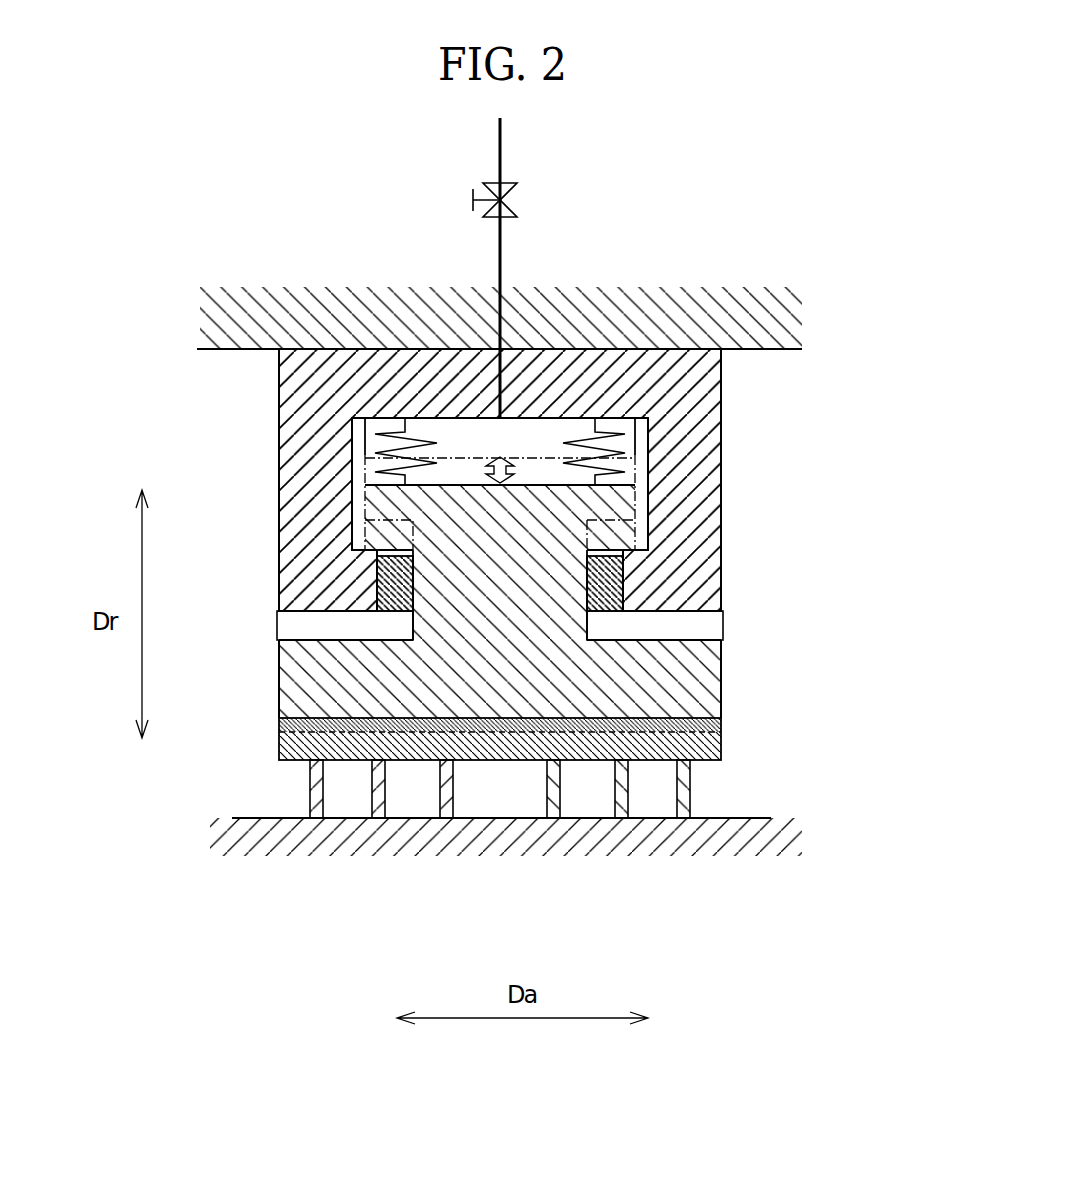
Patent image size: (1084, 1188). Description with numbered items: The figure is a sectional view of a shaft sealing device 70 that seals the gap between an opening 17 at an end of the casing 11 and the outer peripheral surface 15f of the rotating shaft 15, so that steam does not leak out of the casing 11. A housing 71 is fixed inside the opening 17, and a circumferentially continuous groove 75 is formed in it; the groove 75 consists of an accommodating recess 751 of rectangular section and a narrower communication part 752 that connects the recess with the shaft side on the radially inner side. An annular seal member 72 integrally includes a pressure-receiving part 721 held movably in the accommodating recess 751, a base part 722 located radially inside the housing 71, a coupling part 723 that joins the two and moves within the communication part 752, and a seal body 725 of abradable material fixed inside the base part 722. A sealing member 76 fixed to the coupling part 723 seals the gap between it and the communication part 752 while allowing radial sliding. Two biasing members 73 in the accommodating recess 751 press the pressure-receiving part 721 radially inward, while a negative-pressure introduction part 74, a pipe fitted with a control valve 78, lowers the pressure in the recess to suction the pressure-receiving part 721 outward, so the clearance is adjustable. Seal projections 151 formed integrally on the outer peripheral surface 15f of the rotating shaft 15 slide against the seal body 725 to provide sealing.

The casing 11 is at (212, 349).
The opening 17 is at (242, 349).
The shaft sealing device 70 is at (808, 415).
The housing 71 is at (722, 495).
The seal member 72 is at (723, 652).
The pressure-receiving part 721 is at (643, 536).
The base part 722 is at (723, 682).
The coupling part 723 is at (627, 575).
The seal body 725 is at (723, 748).
The biasing member 73 is at (415, 430).
The negative-pressure introduction part 74 is at (502, 255).
The groove 75 is at (358, 432).
The accommodating recess 751 is at (358, 465).
The communication part 752 is at (395, 612).
The sealing member 76 is at (603, 583).
The control valve 78 is at (517, 183).
The rotating shaft 15 is at (762, 818).
The outer peripheral surface 15f is at (240, 818).
The seal projections 151 is at (323, 780).